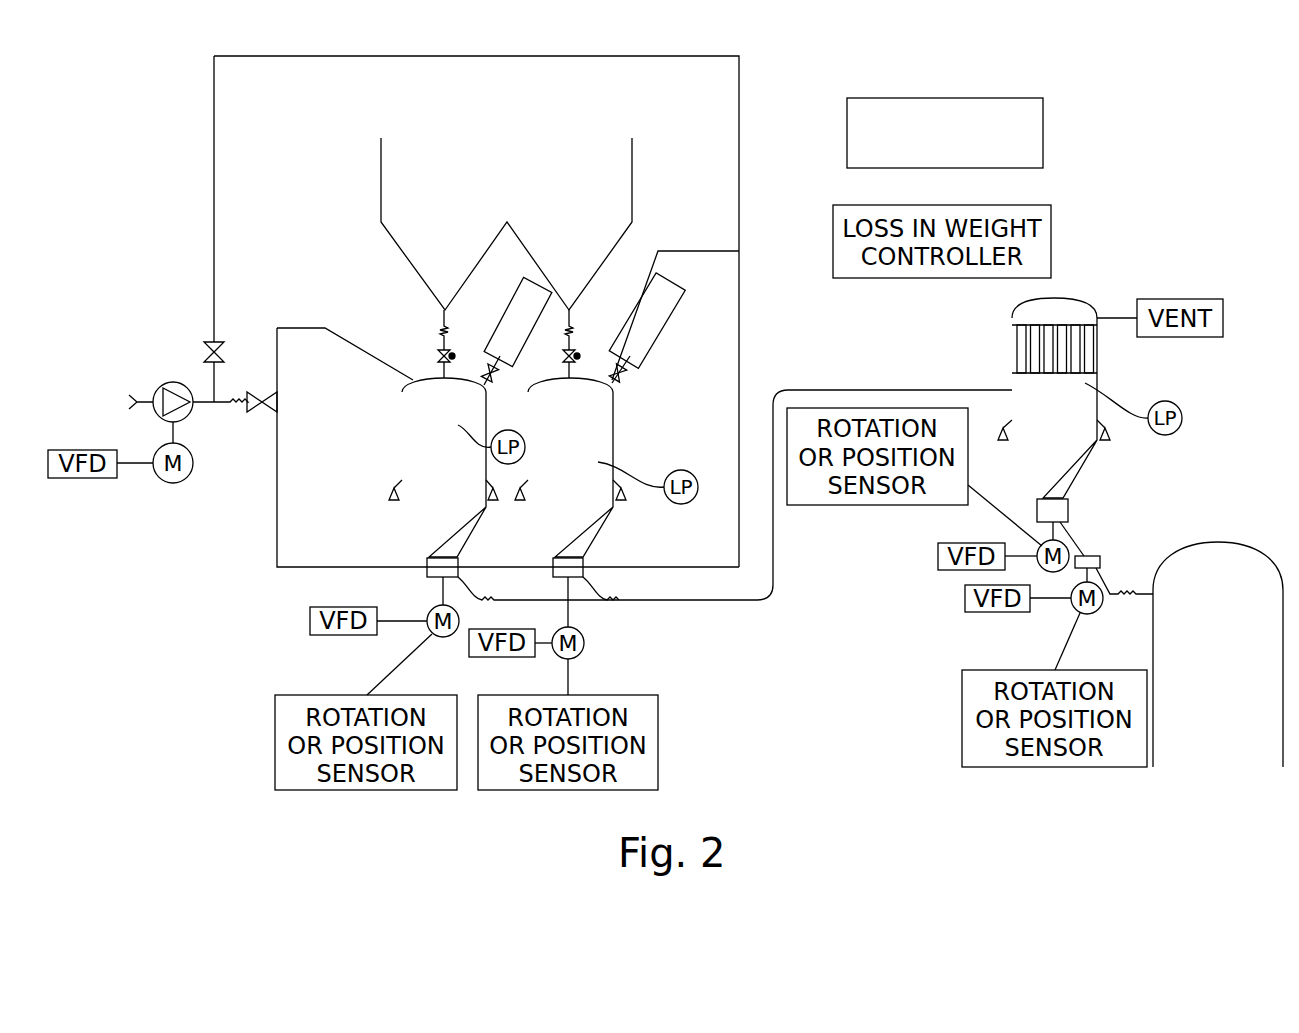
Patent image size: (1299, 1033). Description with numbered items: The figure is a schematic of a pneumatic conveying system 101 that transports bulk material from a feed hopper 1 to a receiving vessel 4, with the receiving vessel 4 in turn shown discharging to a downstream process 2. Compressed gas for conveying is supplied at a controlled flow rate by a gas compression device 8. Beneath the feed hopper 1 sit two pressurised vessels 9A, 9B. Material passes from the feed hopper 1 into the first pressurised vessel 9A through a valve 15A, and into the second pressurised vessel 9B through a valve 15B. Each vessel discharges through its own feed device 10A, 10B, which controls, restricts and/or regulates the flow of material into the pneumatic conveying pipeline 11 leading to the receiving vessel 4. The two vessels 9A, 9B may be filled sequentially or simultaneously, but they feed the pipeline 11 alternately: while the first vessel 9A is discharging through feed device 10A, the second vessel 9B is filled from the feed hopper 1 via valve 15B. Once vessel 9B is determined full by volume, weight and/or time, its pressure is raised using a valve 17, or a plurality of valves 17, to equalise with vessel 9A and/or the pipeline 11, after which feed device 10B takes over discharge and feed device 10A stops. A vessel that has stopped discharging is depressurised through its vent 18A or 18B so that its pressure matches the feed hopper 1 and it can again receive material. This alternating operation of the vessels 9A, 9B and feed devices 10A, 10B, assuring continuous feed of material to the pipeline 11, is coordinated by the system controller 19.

The pneumatic conveying system 101 is at (782, 115).
The feed hopper 1 is at (618, 188).
The system controller 19 is at (1043, 118).
The valve 17 is at (211, 343).
The gas compression device 8 is at (173, 380).
The valve 15A is at (440, 352).
The valve 15B is at (578, 352).
The vent 18A is at (487, 368).
The vent 18B is at (626, 376).
The pressurised vessel 9A is at (425, 470).
The pressurised vessel 9B is at (598, 427).
The feed device 10A is at (430, 565).
The feed device 10B is at (575, 568).
The pneumatic conveying pipeline 11 is at (708, 605).
The receiving vessel 4 is at (1097, 440).
The process 2 is at (1225, 540).